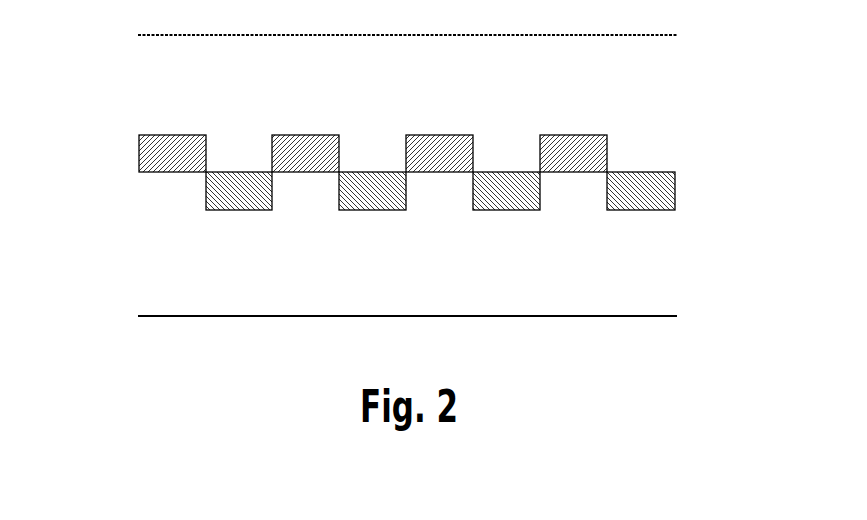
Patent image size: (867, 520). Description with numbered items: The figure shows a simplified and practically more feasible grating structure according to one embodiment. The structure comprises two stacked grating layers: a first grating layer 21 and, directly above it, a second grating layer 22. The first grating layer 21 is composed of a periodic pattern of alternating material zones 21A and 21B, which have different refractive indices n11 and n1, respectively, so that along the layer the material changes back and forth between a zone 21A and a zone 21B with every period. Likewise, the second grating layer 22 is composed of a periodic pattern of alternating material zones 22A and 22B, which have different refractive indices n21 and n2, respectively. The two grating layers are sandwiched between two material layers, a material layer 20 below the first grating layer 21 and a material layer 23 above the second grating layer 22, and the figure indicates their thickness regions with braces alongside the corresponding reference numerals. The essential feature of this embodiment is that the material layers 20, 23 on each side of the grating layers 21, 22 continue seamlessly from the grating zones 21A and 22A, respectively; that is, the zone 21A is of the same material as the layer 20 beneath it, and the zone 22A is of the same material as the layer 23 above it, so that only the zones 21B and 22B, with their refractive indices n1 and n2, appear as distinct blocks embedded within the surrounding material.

The material layer 20 is at (117, 213).
The first grating layer 21 is at (117, 174).
The second grating layer 22 is at (117, 137).
The material layer 23 is at (117, 35).
The material zone 21A is at (587, 188).
The material zone 21B is at (665, 192).
The material zone 22A is at (640, 155).
The material zone 22B is at (580, 140).
The refractive index n1 is at (305, 222).
The refractive index n2 is at (244, 122).
The refractive index n11 is at (238, 203).
The refractive index n21 is at (312, 145).